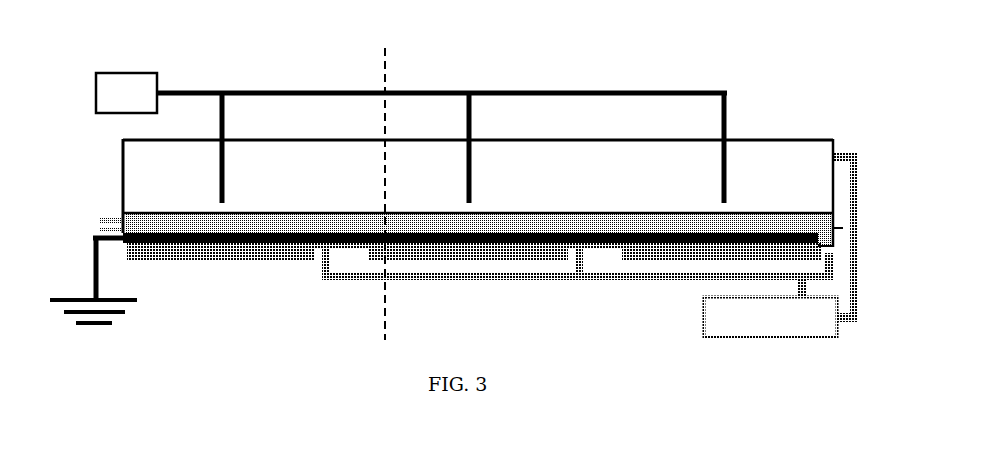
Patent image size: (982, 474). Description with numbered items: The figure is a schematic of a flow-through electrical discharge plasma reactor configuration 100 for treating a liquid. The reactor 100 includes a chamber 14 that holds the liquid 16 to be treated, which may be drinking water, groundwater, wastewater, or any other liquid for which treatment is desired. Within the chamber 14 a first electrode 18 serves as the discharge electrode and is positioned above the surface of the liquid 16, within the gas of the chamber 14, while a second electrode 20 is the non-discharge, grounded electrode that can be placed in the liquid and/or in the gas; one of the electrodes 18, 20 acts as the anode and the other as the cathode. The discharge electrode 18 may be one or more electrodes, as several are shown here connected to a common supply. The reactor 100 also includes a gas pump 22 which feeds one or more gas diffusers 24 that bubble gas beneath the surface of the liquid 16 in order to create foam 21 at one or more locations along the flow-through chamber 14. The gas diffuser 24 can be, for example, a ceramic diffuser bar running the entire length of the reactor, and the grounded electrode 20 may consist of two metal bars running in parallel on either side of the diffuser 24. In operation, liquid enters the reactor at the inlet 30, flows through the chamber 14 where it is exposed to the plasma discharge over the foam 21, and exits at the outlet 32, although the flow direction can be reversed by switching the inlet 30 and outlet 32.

The flow-through electrical discharge plasma reactor configuration 100 is at (198, 28).
The chamber 14 is at (752, 152).
The liquid 16 is at (183, 222).
The first electrode 18 is at (607, 92).
The second electrode 20 is at (656, 250).
The foam 21 is at (485, 222).
The gas pump 22 is at (725, 330).
The gas diffuser 24 is at (150, 250).
The inlet 30 is at (84, 222).
The outlet 32 is at (838, 220).